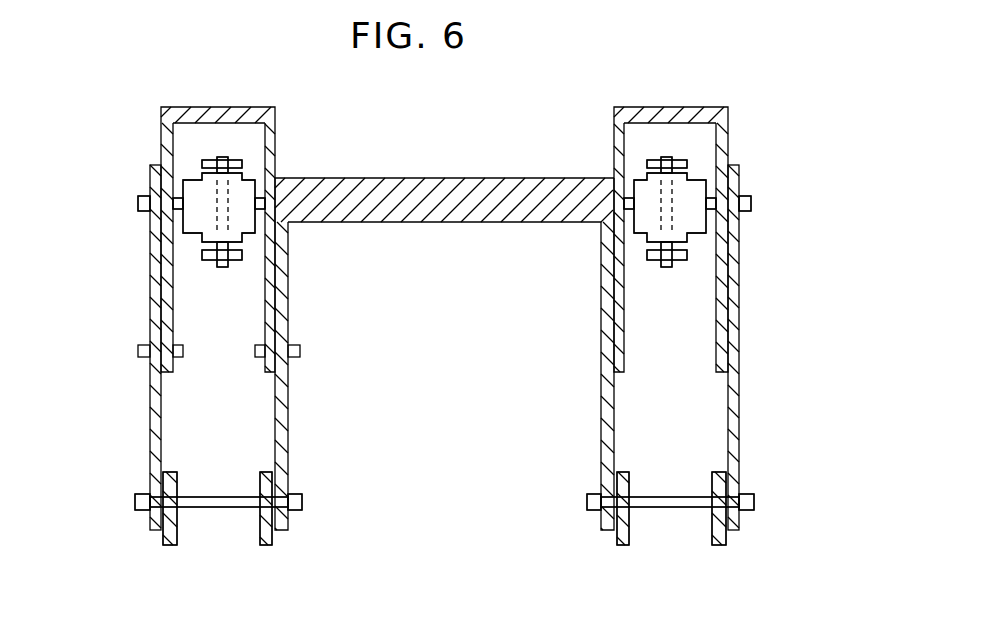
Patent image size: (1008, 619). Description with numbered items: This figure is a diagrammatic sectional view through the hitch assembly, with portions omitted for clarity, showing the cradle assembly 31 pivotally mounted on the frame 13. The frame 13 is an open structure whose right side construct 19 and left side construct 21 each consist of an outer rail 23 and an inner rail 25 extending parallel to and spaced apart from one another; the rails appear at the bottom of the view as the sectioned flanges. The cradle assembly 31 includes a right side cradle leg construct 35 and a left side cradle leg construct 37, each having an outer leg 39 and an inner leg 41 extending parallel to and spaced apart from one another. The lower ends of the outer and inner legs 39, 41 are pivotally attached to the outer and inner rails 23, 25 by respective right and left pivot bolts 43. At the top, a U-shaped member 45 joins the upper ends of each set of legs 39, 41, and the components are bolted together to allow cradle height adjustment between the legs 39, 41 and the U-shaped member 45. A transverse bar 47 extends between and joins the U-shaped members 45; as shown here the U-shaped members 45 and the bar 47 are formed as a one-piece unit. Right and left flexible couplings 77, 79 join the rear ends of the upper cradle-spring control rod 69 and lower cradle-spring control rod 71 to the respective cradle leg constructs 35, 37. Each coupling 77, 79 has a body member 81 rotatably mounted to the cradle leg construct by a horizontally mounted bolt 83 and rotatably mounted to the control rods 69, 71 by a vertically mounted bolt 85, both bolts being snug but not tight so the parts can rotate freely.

The frame 13 is at (445, 328).
The right side construct 19 is at (282, 575).
The left side construct 21 is at (708, 528).
The outer rail 23 is at (163, 532).
The inner rail 25 is at (272, 537).
The cradle assembly 31 is at (446, 296).
The right side cradle leg construct 35 is at (161, 113).
The left side cradle leg construct 37 is at (612, 123).
The outer leg 39 is at (150, 422).
The inner leg 41 is at (288, 440).
The pivot bolt 43 is at (302, 500).
The U-shaped member 45 is at (206, 108).
The bar 47 is at (395, 180).
The upper cradle-spring control rod 69 is at (202, 166).
The lower cradle-spring control rod 71 is at (243, 255).
The right flexible coupling 77 is at (190, 267).
The left flexible coupling 79 is at (688, 274).
The body member 81 is at (197, 214).
The horizontally mounted bolt 83 is at (138, 203).
The vertically mounted bolt 85 is at (224, 158).